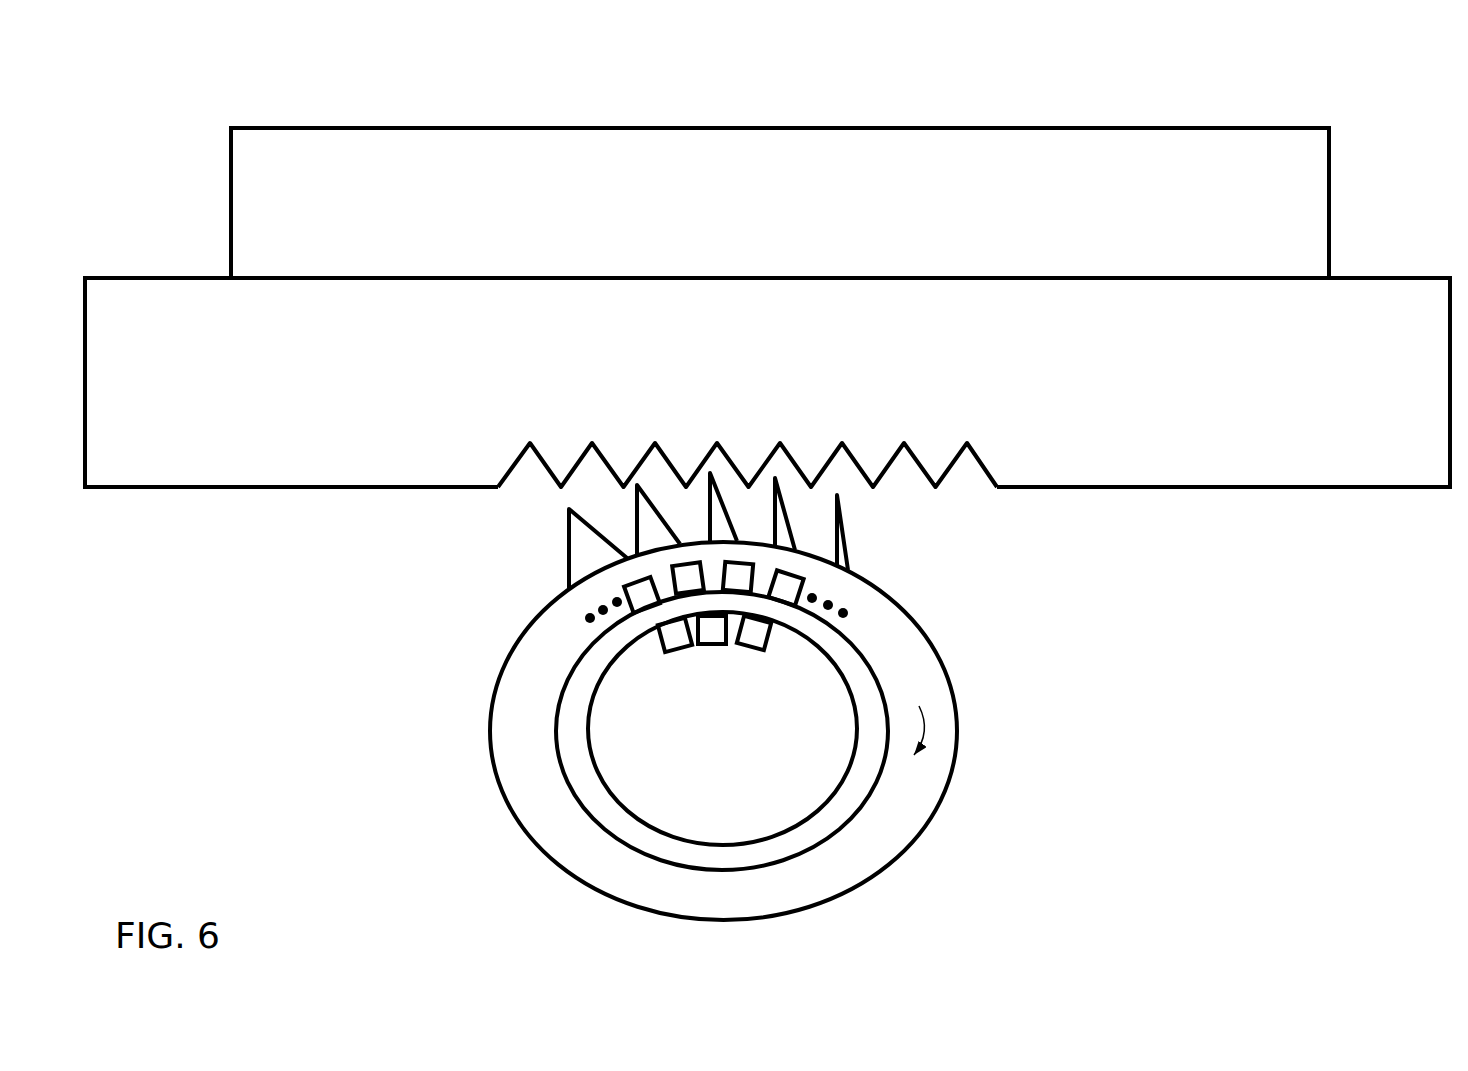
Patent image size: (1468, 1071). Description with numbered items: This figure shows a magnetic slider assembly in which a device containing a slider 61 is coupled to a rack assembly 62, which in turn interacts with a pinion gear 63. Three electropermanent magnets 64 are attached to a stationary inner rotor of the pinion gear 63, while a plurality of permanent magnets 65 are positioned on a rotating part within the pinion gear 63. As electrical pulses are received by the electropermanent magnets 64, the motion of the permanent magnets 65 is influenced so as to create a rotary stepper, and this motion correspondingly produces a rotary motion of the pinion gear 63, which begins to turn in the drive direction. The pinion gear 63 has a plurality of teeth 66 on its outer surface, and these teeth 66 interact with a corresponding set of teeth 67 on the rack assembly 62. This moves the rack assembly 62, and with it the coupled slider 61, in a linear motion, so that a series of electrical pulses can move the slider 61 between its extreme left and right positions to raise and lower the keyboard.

The slider 61 is at (622, 217).
The rack assembly 62 is at (1303, 428).
The pinion gear 63 is at (985, 808).
The electropermanent magnets 64 is at (747, 645).
The permanent magnets 65 is at (677, 565).
The teeth 66 is at (568, 550).
The teeth 67 is at (560, 492).